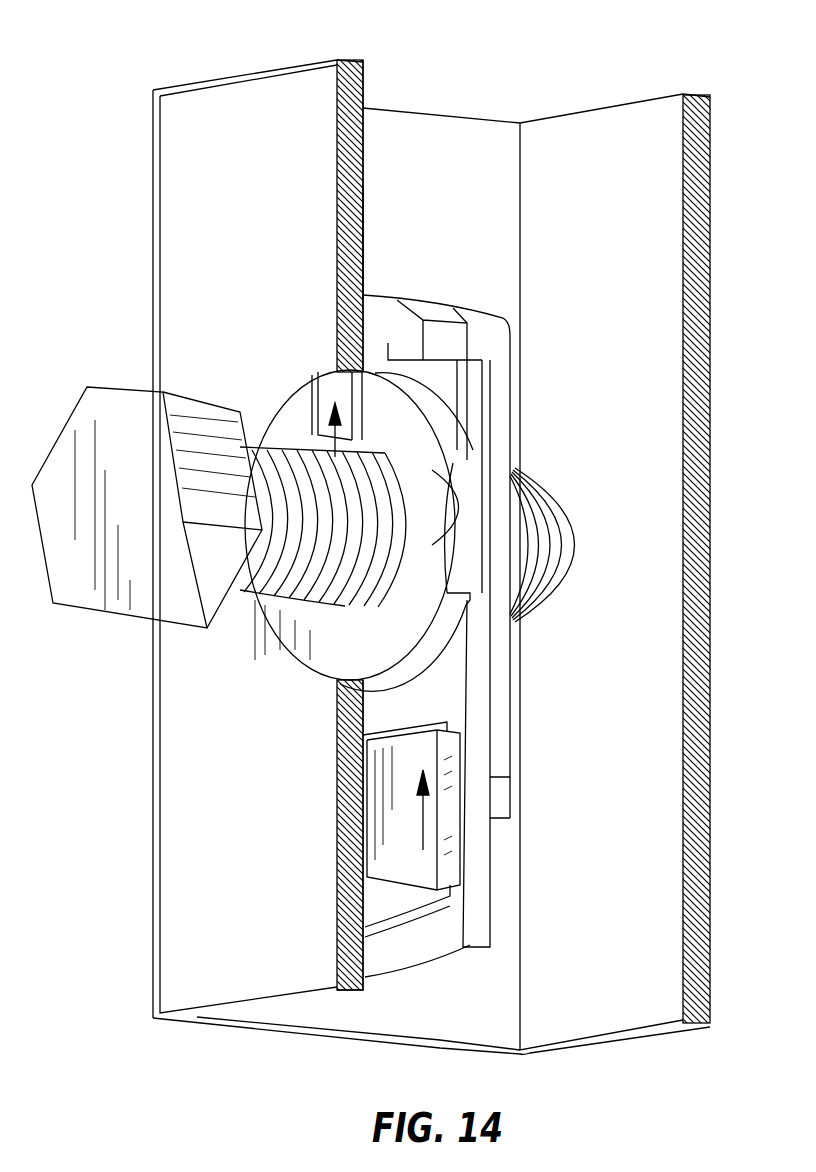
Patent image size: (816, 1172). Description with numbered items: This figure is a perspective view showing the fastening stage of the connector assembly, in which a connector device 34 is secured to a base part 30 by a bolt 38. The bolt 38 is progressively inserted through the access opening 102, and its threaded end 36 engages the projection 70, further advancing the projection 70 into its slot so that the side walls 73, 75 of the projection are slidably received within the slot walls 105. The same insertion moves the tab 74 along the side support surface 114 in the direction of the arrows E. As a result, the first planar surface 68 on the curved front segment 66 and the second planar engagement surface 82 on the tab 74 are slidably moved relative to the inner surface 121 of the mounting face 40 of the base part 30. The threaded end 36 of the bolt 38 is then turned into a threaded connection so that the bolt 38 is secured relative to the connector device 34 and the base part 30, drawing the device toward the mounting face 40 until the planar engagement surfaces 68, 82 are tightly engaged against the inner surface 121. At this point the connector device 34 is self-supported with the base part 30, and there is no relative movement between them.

The base part 30 is at (718, 77).
The connector device 34 is at (515, 345).
The threaded end of the bolt 36 is at (300, 590).
The bolt 38 is at (127, 410).
The mounting face 40 is at (243, 88).
The curved front segment 66 is at (432, 310).
The first planar surface 68 is at (387, 323).
The projection 70 is at (333, 378).
The side wall 73 is at (360, 443).
The tab 74 is at (452, 828).
The side wall 75 is at (310, 410).
The second planar engagement surface 82 is at (437, 722).
The access opening 102 is at (332, 602).
The slot walls 105 is at (258, 442).
The side support surface 114 is at (452, 937).
The inner surface 121 is at (363, 186).
The arrows E is at (330, 440).